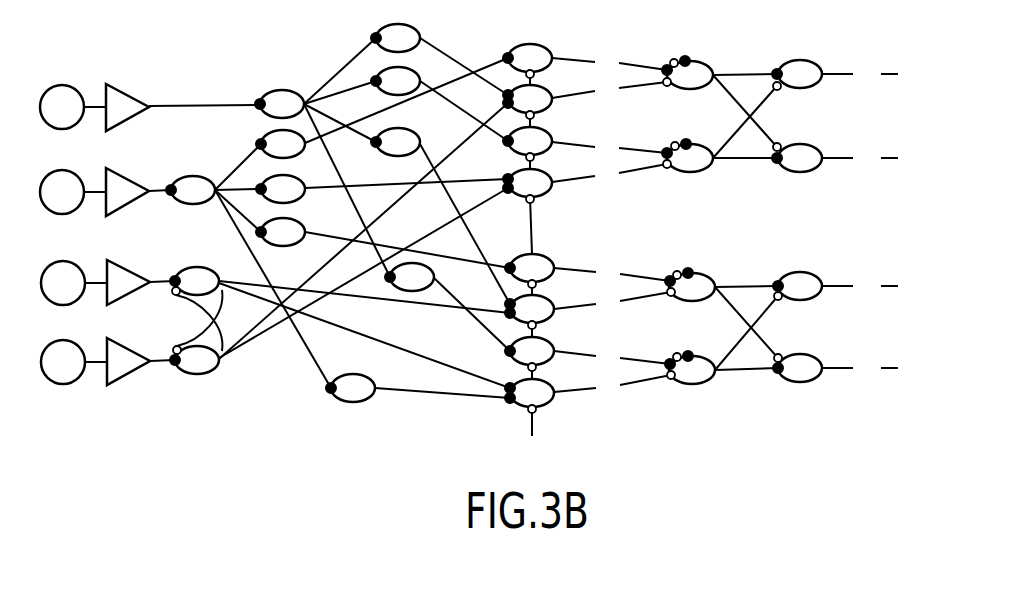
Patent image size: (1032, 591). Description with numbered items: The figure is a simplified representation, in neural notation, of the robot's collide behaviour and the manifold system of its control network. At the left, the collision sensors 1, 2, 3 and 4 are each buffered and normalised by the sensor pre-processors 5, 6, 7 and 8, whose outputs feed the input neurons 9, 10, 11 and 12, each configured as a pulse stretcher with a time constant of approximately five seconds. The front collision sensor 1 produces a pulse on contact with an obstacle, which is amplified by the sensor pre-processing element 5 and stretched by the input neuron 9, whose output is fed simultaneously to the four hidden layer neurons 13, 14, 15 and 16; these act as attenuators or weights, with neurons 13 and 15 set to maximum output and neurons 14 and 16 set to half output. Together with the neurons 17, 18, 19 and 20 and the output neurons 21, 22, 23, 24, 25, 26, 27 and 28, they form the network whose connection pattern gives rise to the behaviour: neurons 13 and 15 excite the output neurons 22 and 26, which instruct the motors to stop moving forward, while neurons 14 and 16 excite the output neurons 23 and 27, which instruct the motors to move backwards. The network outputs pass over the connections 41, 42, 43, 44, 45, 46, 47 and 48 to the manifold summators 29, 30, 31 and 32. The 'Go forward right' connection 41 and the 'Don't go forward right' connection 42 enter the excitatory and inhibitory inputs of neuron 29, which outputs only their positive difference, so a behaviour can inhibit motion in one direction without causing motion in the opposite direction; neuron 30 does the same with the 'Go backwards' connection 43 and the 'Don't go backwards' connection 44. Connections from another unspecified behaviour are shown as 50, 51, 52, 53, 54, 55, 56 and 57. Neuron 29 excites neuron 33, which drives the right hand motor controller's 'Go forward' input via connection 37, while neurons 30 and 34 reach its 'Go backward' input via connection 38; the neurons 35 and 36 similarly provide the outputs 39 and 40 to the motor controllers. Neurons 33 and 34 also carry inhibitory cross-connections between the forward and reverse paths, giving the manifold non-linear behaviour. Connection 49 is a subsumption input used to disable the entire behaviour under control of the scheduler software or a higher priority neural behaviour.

The front collision sensor 1 is at (73, 107).
The collision sensor 2 is at (73, 192).
The collision sensor 3 is at (74, 283).
The collision sensor 4 is at (74, 362).
The sensor pre-processor 5 is at (183, 107).
The sensor pre-processor 6 is at (138, 192).
The sensor pre-processor 7 is at (141, 282).
The sensor pre-processor 8 is at (141, 361).
The input neuron 9 is at (322, 157).
The input neuron 10 is at (248, 266).
The input neuron 11 is at (340, 327).
The input neuron 12 is at (339, 238).
The hidden layer neuron 13 is at (439, 59).
The hidden layer neuron 14 is at (439, 104).
The hidden layer neuron 15 is at (440, 216).
The hidden layer neuron 16 is at (447, 307).
The network neuron 17 is at (382, 108).
The network neuron 18 is at (382, 189).
The network neuron 19 is at (383, 243).
The network neuron 20 is at (418, 388).
The output neuron 21 is at (527, 64).
The output neuron 22 is at (527, 106).
The output neuron 23 is at (527, 148).
The output neuron 24 is at (527, 211).
The output neuron 25 is at (529, 274).
The output neuron 26 is at (529, 316).
The output neuron 27 is at (529, 358).
The output neuron 28 is at (529, 396).
The manifold summator 29 is at (719, 104).
The manifold summator 30 is at (719, 129).
The manifold summator 31 is at (721, 315).
The manifold summator 32 is at (721, 340).
The output neuron 33 is at (797, 75).
The output neuron 34 is at (797, 157).
The output neuron 35 is at (797, 286).
The output neuron 36 is at (797, 368).
The connection 37 is at (860, 73).
The connection 38 is at (860, 157).
The output 39 is at (860, 285).
The output 40 is at (860, 367).
The connection 41 is at (609, 61).
The connection 42 is at (609, 89).
The connection 43 is at (609, 146).
The connection 44 is at (609, 174).
The connection 45 is at (612, 272).
The connection 46 is at (612, 301).
The connection 47 is at (612, 356).
The connection 48 is at (612, 384).
The subsumption input 49 is at (533, 472).
The connection from another behaviour 50 is at (685, 6).
The connection from another behaviour 51 is at (647, 15).
The connection from another behaviour 52 is at (686, 96).
The connection from another behaviour 53 is at (647, 98).
The connection from another behaviour 54 is at (688, 219).
The connection from another behaviour 55 is at (648, 227).
The connection from another behaviour 56 is at (688, 307).
The connection from another behaviour 57 is at (648, 310).